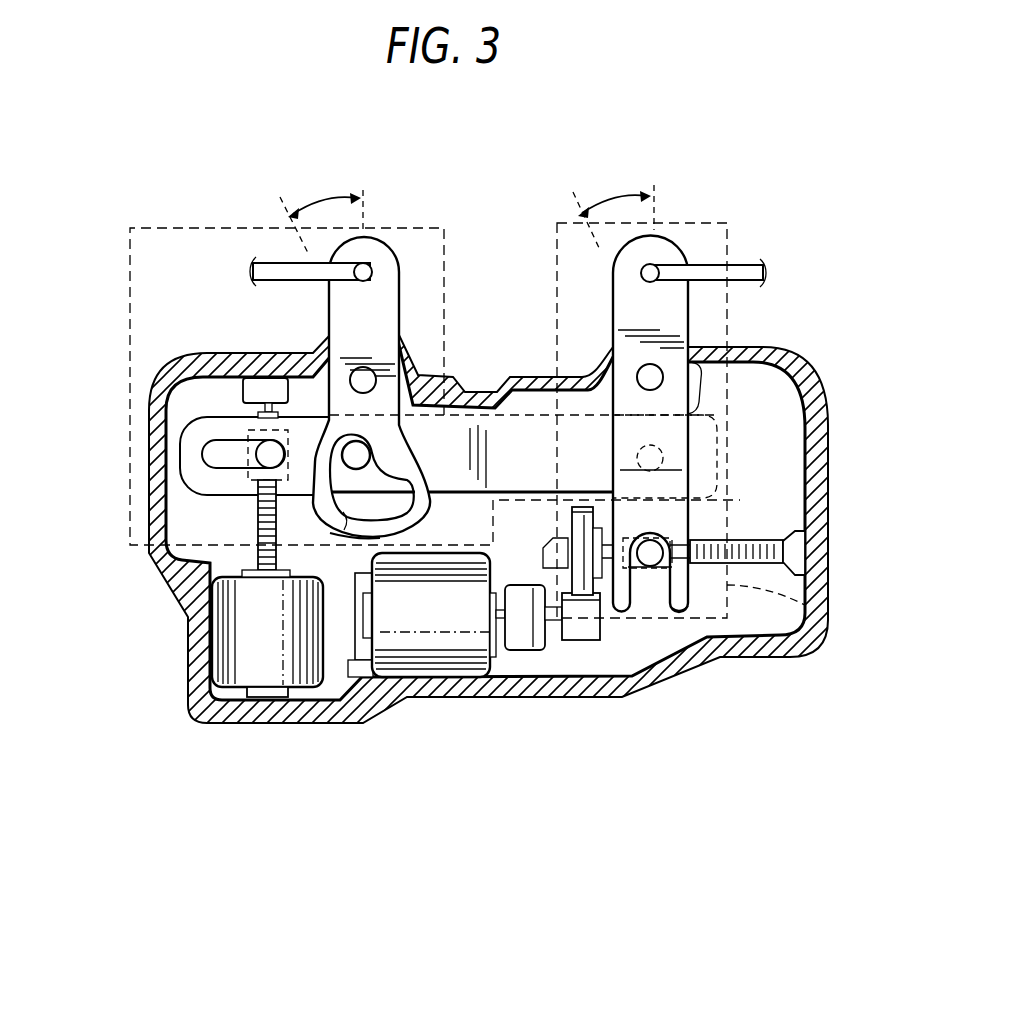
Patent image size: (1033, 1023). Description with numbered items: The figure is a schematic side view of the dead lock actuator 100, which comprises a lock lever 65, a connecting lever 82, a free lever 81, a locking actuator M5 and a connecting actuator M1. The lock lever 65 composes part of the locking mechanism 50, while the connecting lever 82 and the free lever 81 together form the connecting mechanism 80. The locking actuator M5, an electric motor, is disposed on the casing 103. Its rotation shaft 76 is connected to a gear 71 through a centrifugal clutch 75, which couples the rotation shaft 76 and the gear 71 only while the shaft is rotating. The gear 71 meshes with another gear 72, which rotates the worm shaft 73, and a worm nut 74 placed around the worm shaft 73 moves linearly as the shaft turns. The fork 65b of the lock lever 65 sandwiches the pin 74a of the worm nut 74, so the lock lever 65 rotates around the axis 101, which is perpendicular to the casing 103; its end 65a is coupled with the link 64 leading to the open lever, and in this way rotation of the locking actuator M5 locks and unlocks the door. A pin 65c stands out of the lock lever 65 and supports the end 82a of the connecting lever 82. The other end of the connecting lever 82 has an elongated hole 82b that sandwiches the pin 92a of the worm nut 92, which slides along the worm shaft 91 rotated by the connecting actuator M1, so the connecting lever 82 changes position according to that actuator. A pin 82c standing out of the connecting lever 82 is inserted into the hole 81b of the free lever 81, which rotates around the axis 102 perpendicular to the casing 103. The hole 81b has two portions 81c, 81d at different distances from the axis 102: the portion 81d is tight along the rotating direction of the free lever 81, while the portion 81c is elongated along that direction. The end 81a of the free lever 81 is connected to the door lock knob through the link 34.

The link 34 is at (263, 262).
The connecting mechanism 80 is at (128, 293).
The connecting lever 82 is at (292, 352).
The end of the connecting lever 82a is at (663, 470).
The elongated hole 82b is at (225, 430).
The pin 82c is at (337, 497).
The pin of the worm nut 92a is at (235, 458).
The worm nut 92 is at (268, 456).
The worm shaft 91 is at (258, 485).
The free lever 81 is at (398, 300).
The end of the free lever 81a is at (395, 268).
The hole 81b is at (341, 512).
The portion of the hole 81c is at (337, 540).
The portion of the hole 81d is at (390, 485).
The axis 102 is at (365, 470).
The connecting actuator M1 is at (250, 663).
The casing 103 is at (300, 726).
The locking actuator M5 is at (457, 625).
The rotation shaft 76 is at (499, 620).
The centrifugal clutch 75 is at (528, 650).
The gear 71 is at (580, 642).
The gear 72 is at (600, 582).
The worm nut 74 is at (652, 567).
The pin of the worm nut 74a is at (645, 578).
The worm shaft 73 is at (767, 540).
The lock lever 65 is at (673, 318).
The end of the lock actuator lever 65a is at (667, 256).
The fork 65b is at (688, 606).
The pin 65c is at (640, 477).
The link 64 is at (753, 262).
The axis 101 is at (663, 390).
The locking mechanism 50 is at (822, 616).
The dead lock actuator 100 is at (475, 505).